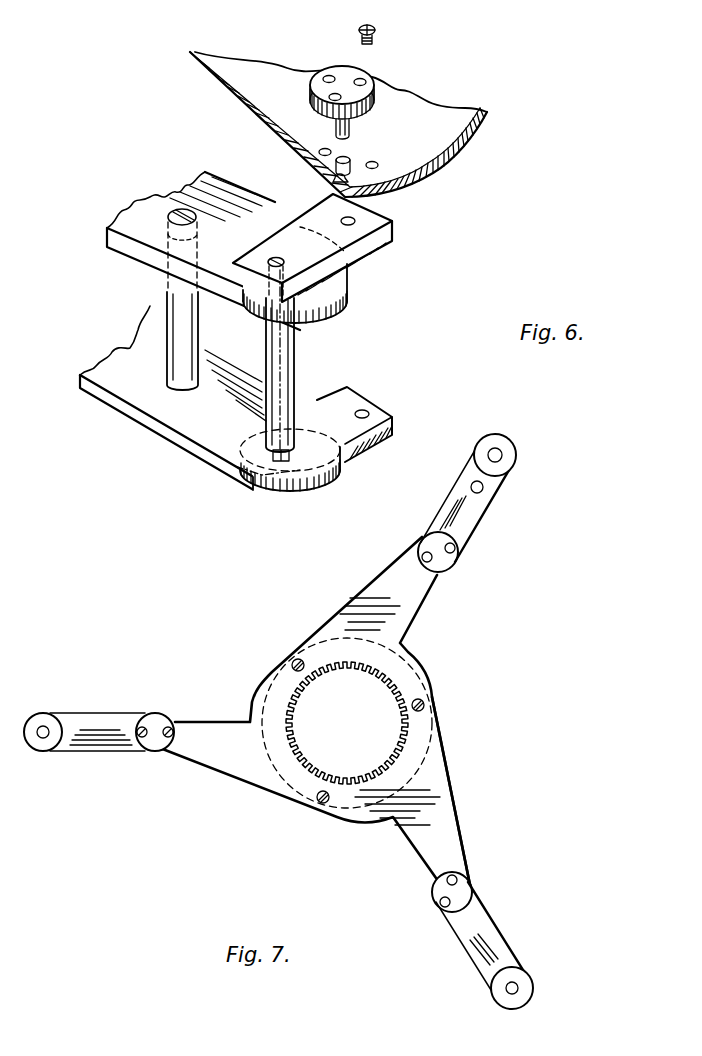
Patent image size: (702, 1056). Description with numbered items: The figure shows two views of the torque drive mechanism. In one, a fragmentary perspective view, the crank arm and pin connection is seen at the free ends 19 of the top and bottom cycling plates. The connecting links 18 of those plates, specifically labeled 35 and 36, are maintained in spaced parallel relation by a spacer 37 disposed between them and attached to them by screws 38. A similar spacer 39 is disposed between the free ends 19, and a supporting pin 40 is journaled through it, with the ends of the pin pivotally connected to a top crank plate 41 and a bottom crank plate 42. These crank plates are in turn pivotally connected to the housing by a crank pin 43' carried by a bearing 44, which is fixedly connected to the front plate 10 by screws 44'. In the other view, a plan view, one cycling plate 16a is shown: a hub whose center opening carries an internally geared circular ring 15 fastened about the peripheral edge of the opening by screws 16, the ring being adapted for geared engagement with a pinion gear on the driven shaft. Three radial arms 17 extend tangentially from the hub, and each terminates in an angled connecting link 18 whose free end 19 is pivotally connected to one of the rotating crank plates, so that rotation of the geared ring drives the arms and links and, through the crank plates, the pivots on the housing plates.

In FIG. 6, the front plate 10 is at (440, 150).
In FIG. 7, the circular ring 15 is at (430, 760).
In FIG. 7, the screws 16 is at (300, 659).
In FIG. 7, the top cycling plate 16a is at (456, 804).
In FIG. 7, the radial arms 17 is at (415, 608).
In FIG. 6, the connecting link 18 is at (207, 163).
In FIG. 7, the connecting link 18 is at (90, 722).
In FIG. 6, the free ends 19 is at (340, 300).
In FIG. 6, the connecting link 35 is at (228, 183).
In FIG. 6, the connecting link 36 is at (220, 445).
In FIG. 6, the spacer 37 is at (164, 290).
In FIG. 6, the screws 38 is at (170, 208).
In FIG. 6, the spacer 39 is at (296, 347).
In FIG. 6, the supporting pin 40 is at (284, 262).
In FIG. 6, the top crank plate 41 is at (393, 236).
In FIG. 6, the bottom crank plate 42 is at (372, 406).
In FIG. 6, the crank pin 43' is at (369, 128).
In FIG. 6, the bearing 44 is at (361, 88).
In FIG. 6, the screws 44' is at (392, 38).